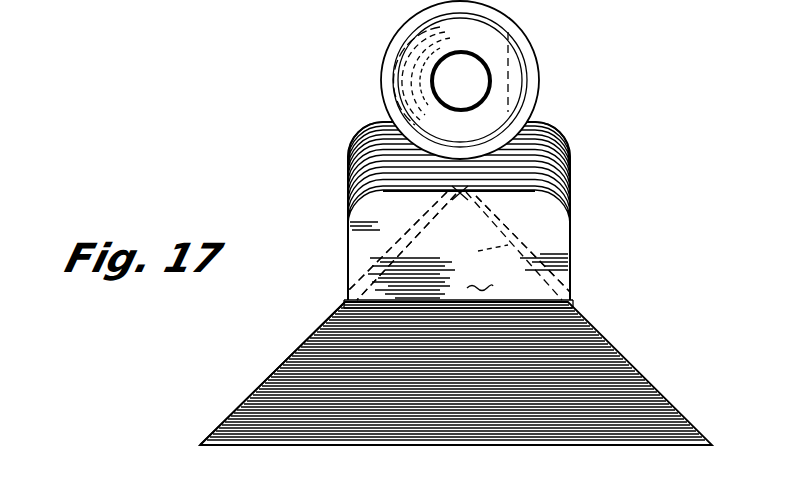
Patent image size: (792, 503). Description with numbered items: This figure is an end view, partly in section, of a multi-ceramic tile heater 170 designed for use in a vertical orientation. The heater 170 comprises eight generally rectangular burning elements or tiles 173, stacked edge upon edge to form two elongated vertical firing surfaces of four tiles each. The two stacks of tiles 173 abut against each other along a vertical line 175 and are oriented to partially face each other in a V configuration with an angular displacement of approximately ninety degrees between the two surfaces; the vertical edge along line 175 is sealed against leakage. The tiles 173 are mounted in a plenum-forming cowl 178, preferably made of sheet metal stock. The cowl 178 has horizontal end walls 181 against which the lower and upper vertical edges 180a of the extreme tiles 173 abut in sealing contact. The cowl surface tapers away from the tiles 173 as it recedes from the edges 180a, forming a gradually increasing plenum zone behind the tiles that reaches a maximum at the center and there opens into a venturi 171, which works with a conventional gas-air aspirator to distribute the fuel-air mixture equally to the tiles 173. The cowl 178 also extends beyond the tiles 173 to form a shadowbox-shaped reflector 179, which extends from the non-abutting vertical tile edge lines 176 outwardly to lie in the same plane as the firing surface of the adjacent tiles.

The heater 170 is at (673, 368).
The venturi 171 is at (538, 62).
The tiles 173 is at (477, 252).
The vertical line 175 is at (458, 243).
The non-abutting vertical tile edge lines 176 is at (355, 274).
The cowl 178 is at (569, 160).
The shadowbox-shaped reflector 179 is at (282, 369).
The lower and upper vertical edges 180a is at (409, 234).
The horizontal end walls 181 is at (482, 279).